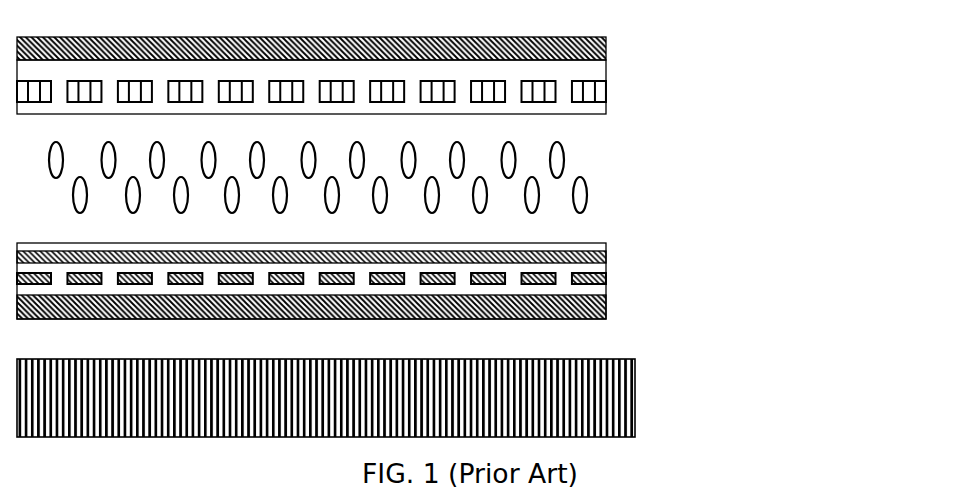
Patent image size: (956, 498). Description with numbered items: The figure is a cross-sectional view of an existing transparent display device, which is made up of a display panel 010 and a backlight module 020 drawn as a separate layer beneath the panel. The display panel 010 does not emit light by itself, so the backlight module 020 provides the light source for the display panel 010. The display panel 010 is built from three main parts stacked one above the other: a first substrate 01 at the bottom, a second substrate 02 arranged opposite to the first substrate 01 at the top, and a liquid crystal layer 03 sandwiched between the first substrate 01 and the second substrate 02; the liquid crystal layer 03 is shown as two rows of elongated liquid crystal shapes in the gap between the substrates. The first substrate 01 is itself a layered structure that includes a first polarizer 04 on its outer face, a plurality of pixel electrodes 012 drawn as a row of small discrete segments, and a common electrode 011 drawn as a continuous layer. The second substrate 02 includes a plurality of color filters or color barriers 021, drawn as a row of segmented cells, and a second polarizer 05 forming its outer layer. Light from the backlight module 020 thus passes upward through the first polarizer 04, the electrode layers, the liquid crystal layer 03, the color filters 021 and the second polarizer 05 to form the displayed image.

The display panel 010 is at (457, 169).
The second substrate 02 is at (406, 65).
The second polarizer 05 is at (605, 52).
The color filters/color barriers 021 is at (605, 92).
The liquid crystal layer 03 is at (588, 182).
The first substrate 01 is at (406, 260).
The common electrode 011 is at (605, 255).
The pixel electrodes 012 is at (605, 276).
The first polarizer 04 is at (359, 305).
The backlight module 020 is at (678, 360).